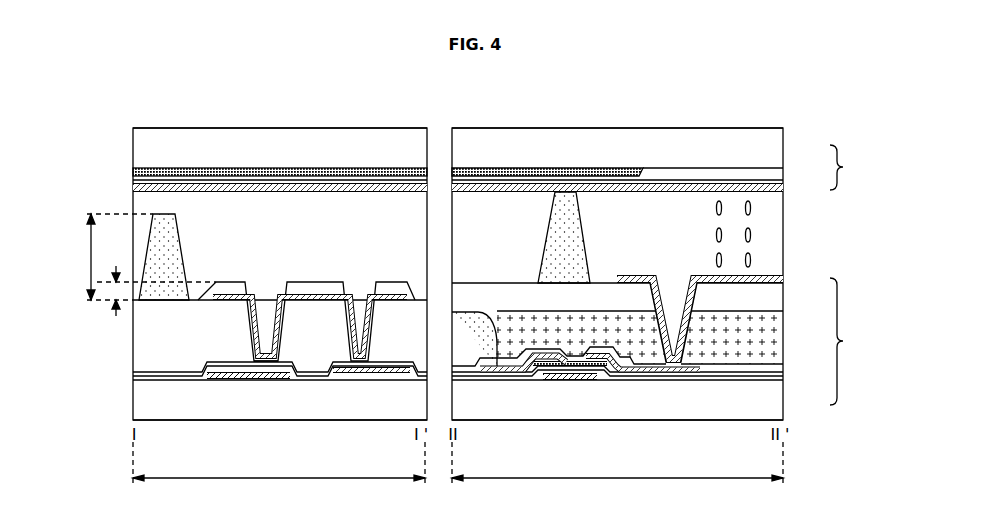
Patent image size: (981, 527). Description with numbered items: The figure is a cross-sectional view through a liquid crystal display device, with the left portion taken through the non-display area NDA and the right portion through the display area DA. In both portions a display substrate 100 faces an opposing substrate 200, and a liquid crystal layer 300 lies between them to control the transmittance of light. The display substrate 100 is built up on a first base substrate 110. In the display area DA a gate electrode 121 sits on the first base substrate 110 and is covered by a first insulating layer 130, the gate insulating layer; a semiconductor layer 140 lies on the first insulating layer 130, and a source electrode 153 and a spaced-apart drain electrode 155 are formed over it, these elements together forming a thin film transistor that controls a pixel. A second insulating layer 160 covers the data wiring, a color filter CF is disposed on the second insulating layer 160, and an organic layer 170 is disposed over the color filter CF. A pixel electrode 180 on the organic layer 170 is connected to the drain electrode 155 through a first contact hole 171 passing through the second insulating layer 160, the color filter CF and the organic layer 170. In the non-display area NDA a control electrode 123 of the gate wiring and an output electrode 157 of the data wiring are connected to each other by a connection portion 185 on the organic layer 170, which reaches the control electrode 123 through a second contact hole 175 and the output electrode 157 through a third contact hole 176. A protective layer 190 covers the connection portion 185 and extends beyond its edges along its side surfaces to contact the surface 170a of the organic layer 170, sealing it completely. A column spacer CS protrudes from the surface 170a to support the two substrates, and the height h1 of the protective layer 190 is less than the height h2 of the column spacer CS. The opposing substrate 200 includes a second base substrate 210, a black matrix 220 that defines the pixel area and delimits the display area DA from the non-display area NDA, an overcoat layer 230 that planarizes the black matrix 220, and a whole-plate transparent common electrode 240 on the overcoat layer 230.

The display substrate 100 is at (854, 341).
The first base substrate 110 is at (142, 400).
The gate electrode 121 is at (570, 381).
The control electrode 123 is at (243, 381).
The first insulating layer 130 is at (140, 378).
The semiconductor layer 140 is at (533, 367).
The source electrode 153 is at (494, 373).
The drain electrode 155 is at (662, 373).
The output electrode 157 is at (375, 374).
The second insulating layer 160 is at (140, 373).
The organic layer 170 is at (142, 338).
The surface of the organic layer 170a is at (199, 294).
The first contact hole 171 is at (678, 297).
The second contact hole 175 is at (253, 297).
The third contact hole 176 is at (357, 297).
The pixel electrode 180 is at (785, 279).
The connection portion 185 is at (275, 364).
The protective layer 190 is at (311, 291).
The opposing substrate 200 is at (854, 167).
The second base substrate 210 is at (141, 148).
The black matrix 220 is at (140, 172).
The overcoat layer 230 is at (140, 179).
The common electrode 240 is at (140, 187).
The liquid crystal layer 300 is at (785, 235).
The column spacer CS is at (163, 225).
The color filter CF is at (785, 338).
The non-display area NDA is at (279, 488).
The display area DA is at (617, 488).
The height of the protective layer h1 is at (151, 291).
The height of the column spacer h2 is at (111, 257).